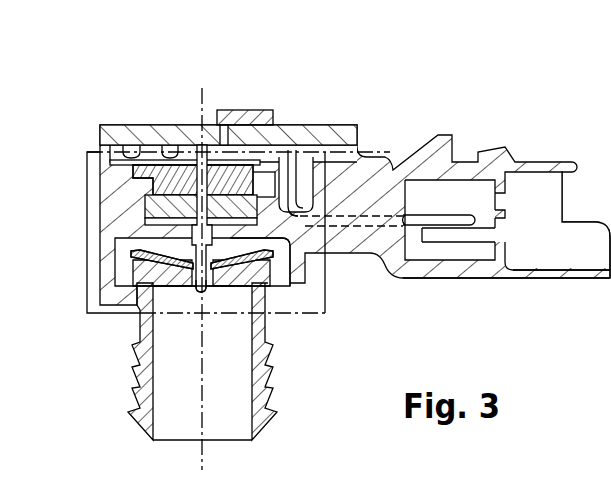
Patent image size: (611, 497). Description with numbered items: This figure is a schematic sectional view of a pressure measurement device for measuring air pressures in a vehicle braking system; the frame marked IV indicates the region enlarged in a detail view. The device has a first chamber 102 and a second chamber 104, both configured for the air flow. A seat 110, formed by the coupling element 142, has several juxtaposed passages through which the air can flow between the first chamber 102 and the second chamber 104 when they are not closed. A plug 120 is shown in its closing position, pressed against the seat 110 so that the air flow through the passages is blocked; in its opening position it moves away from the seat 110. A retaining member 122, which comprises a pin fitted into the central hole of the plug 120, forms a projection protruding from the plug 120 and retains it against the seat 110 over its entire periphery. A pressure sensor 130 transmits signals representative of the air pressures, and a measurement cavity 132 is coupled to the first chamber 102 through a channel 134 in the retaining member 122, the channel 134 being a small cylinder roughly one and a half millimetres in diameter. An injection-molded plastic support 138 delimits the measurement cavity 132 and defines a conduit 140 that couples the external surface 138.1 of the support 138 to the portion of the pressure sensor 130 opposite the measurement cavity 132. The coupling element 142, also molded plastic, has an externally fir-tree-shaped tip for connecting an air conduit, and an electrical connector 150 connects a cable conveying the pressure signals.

The first chamber 102 is at (185, 393).
The second chamber 104 is at (120, 244).
The seat 110 is at (270, 270).
The plug 120 is at (138, 251).
The retaining member 122 is at (133, 290).
The pressure sensor 130 is at (160, 182).
The measurement cavity 132 is at (194, 200).
The channel 134 is at (197, 296).
The support 138 is at (380, 182).
The external surface 138.1 is at (258, 100).
The conduit 140 is at (268, 120).
The coupling element 142 is at (257, 373).
The electrical connector 150 is at (453, 270).
The detail section IV is at (87, 170).